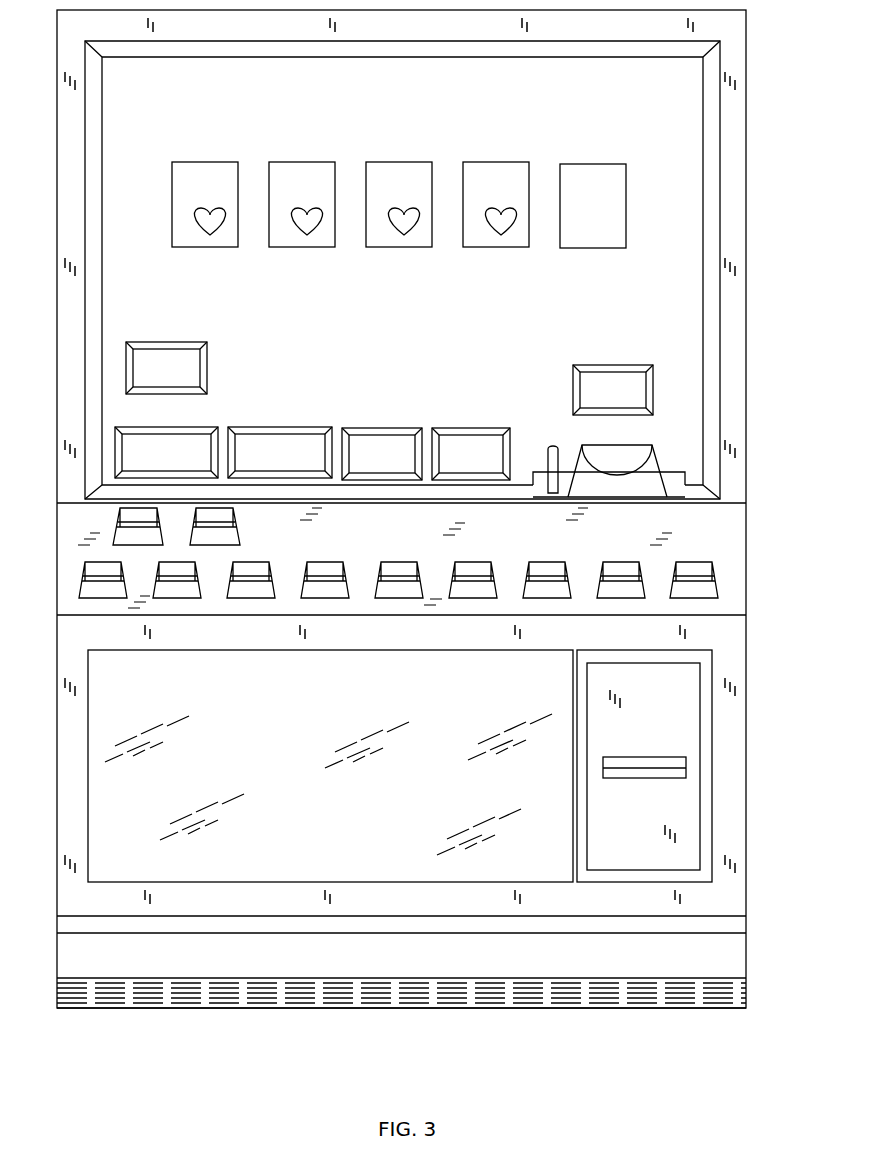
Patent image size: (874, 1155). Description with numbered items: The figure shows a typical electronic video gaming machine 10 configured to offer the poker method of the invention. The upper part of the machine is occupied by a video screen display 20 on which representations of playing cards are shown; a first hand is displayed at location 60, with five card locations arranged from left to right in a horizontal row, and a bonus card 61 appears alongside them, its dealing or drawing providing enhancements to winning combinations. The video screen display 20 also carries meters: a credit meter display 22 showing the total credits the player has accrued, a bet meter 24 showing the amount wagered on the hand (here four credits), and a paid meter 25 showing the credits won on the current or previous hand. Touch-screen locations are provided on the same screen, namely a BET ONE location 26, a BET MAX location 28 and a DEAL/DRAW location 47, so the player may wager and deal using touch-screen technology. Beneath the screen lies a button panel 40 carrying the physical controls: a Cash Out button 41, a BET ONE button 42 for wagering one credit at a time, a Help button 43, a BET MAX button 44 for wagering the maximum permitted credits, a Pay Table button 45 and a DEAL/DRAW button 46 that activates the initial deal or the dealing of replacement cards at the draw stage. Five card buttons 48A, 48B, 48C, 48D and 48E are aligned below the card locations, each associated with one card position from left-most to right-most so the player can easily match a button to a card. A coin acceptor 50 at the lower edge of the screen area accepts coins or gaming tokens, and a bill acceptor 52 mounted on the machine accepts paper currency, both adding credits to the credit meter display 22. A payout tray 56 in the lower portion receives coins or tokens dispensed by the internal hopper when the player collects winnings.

The electronic video gaming machine 10 is at (758, 212).
The video screen display 20 is at (682, 118).
The credit meter display 22 is at (133, 447).
The bet meter 24 is at (320, 443).
The paid meter 25 is at (186, 362).
The BET ONE location 26 is at (396, 437).
The BET MAX location 28 is at (490, 442).
The button panel 40 is at (66, 540).
The Cash Out button 41 is at (90, 590).
The BET ONE button 42 is at (182, 590).
The Help button 43 is at (128, 515).
The BET MAX button 44 is at (266, 588).
The Pay Table button 45 is at (225, 515).
The DEAL/DRAW button 46 is at (700, 593).
The DEAL/DRAW location 47 is at (628, 373).
The card button 48A is at (336, 593).
The card button 48B is at (408, 590).
The card button 48C is at (470, 592).
The card button 48D is at (544, 590).
The card button 48E is at (615, 592).
The coin acceptor 50 is at (652, 487).
The bill acceptor 52 is at (680, 775).
The payout tray 56 is at (330, 766).
The first hand location 60 is at (128, 188).
The bonus card 61 is at (620, 180).